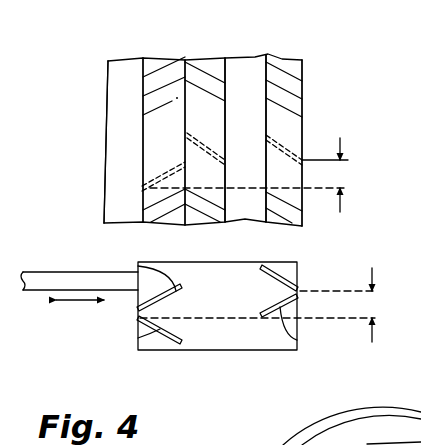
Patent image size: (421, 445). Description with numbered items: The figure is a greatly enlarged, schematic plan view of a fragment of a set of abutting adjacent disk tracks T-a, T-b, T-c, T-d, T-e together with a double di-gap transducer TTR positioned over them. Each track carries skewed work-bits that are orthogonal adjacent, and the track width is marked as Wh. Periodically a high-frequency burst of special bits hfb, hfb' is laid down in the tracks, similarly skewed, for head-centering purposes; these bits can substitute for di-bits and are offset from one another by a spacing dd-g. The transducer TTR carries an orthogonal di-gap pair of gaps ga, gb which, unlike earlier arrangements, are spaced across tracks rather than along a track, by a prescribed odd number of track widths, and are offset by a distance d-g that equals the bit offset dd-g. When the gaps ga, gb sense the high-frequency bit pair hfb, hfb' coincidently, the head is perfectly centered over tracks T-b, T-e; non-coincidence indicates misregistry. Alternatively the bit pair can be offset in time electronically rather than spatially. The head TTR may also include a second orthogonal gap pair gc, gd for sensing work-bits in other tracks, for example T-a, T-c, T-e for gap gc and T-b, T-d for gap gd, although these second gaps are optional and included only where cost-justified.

The disk track T-a is at (125, 61).
The disk track T-b is at (163, 56).
The disk track T-c is at (200, 59).
The disk track T-d is at (243, 56).
The disk track T-e is at (282, 59).
The tooth width Wh is at (259, 118).
The high-frequency special bit hfb is at (116, 168).
The high-frequency special bit hfb' is at (267, 138).
The offset spacing dd-g is at (266, 175).
The transducer TTR is at (231, 353).
The gap gb is at (138, 265).
The second gap gc is at (140, 337).
The gap ga is at (297, 268).
The second gap gd is at (297, 338).
The offset d-g is at (272, 305).